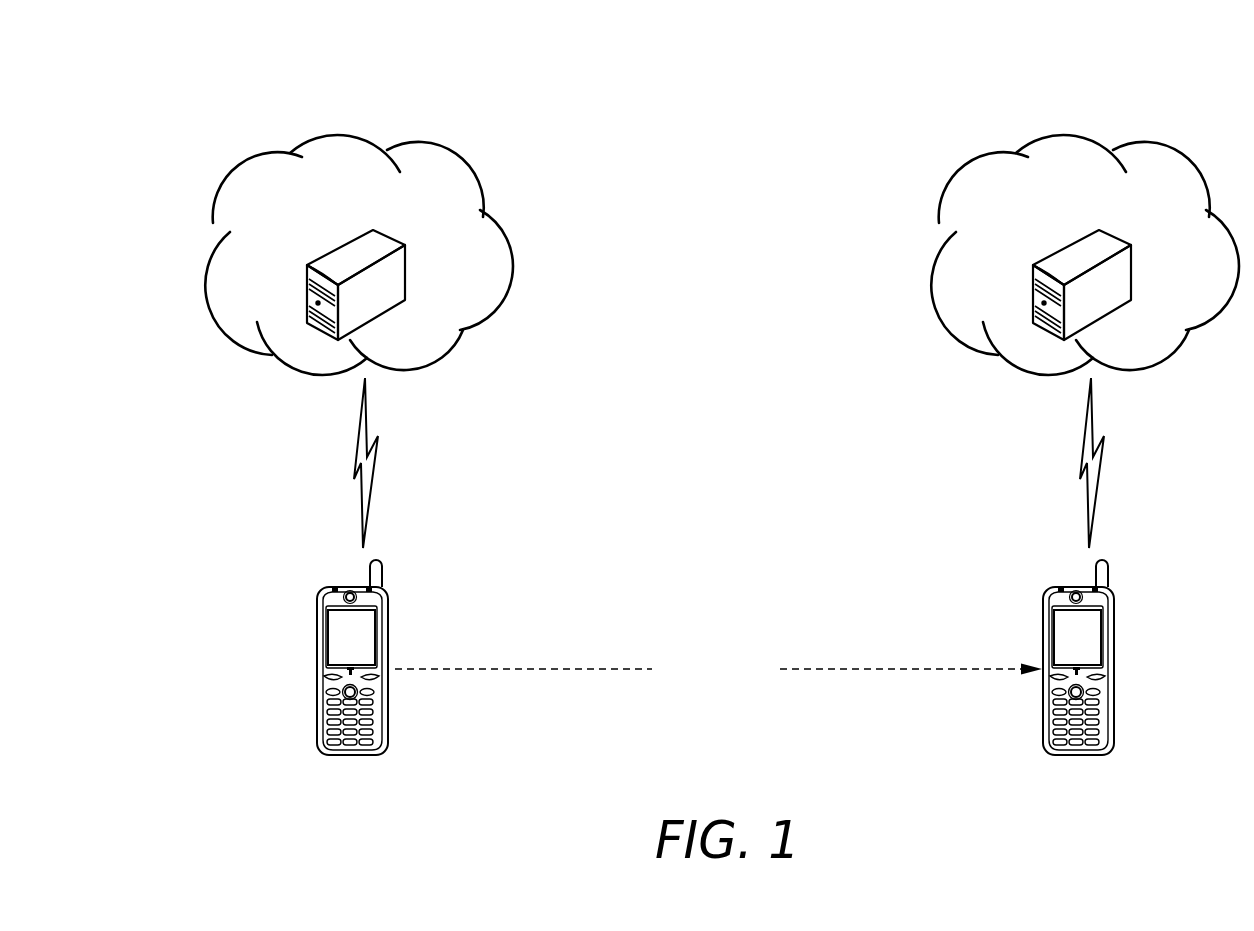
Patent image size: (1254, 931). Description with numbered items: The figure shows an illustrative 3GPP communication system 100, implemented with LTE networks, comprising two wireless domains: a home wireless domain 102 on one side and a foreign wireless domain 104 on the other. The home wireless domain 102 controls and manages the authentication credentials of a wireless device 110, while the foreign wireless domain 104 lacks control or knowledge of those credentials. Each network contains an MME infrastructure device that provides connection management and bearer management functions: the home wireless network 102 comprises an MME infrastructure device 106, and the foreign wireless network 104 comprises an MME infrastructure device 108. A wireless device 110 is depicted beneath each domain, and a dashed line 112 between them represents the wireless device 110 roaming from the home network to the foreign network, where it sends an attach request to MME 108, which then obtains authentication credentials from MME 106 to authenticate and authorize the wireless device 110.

The communication system 100 is at (170, 121).
The home wireless domain 102 is at (450, 150).
The foreign wireless domain 104 is at (1176, 150).
The MME infrastructure device 106 is at (322, 256).
The MME infrastructure device 108 is at (1048, 256).
The wireless device 110 is at (317, 668).
The dashed line 112 is at (845, 672).